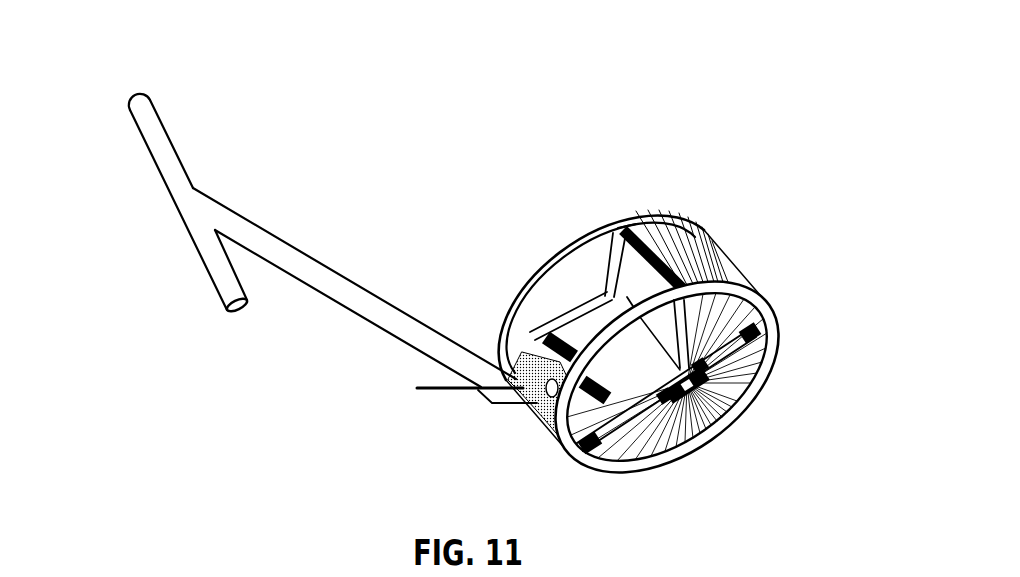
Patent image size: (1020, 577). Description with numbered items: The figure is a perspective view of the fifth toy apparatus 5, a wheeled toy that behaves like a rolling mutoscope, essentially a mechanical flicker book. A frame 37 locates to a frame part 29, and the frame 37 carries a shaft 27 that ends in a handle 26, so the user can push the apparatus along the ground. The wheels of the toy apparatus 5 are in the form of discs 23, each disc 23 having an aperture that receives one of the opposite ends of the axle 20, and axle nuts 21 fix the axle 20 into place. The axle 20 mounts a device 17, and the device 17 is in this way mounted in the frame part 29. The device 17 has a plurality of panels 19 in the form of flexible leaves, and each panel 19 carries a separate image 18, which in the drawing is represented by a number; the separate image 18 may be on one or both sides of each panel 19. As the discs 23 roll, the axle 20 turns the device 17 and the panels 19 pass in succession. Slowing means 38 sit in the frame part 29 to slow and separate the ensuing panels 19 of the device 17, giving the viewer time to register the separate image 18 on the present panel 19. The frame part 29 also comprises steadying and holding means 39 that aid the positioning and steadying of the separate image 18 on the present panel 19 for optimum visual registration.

The toy apparatus 5 is at (655, 97).
The device 17 is at (547, 207).
The separate image 18 is at (616, 232).
The panel 19 is at (720, 275).
The axle 20 is at (692, 393).
The axle nut 21 is at (702, 385).
The disc 23 is at (565, 290).
The handle 26 is at (180, 188).
The shaft 27 is at (287, 260).
The frame part 29 is at (593, 430).
The frame 37 is at (452, 381).
The slowing means 38 is at (532, 340).
The steadying and holding means 39 is at (647, 229).